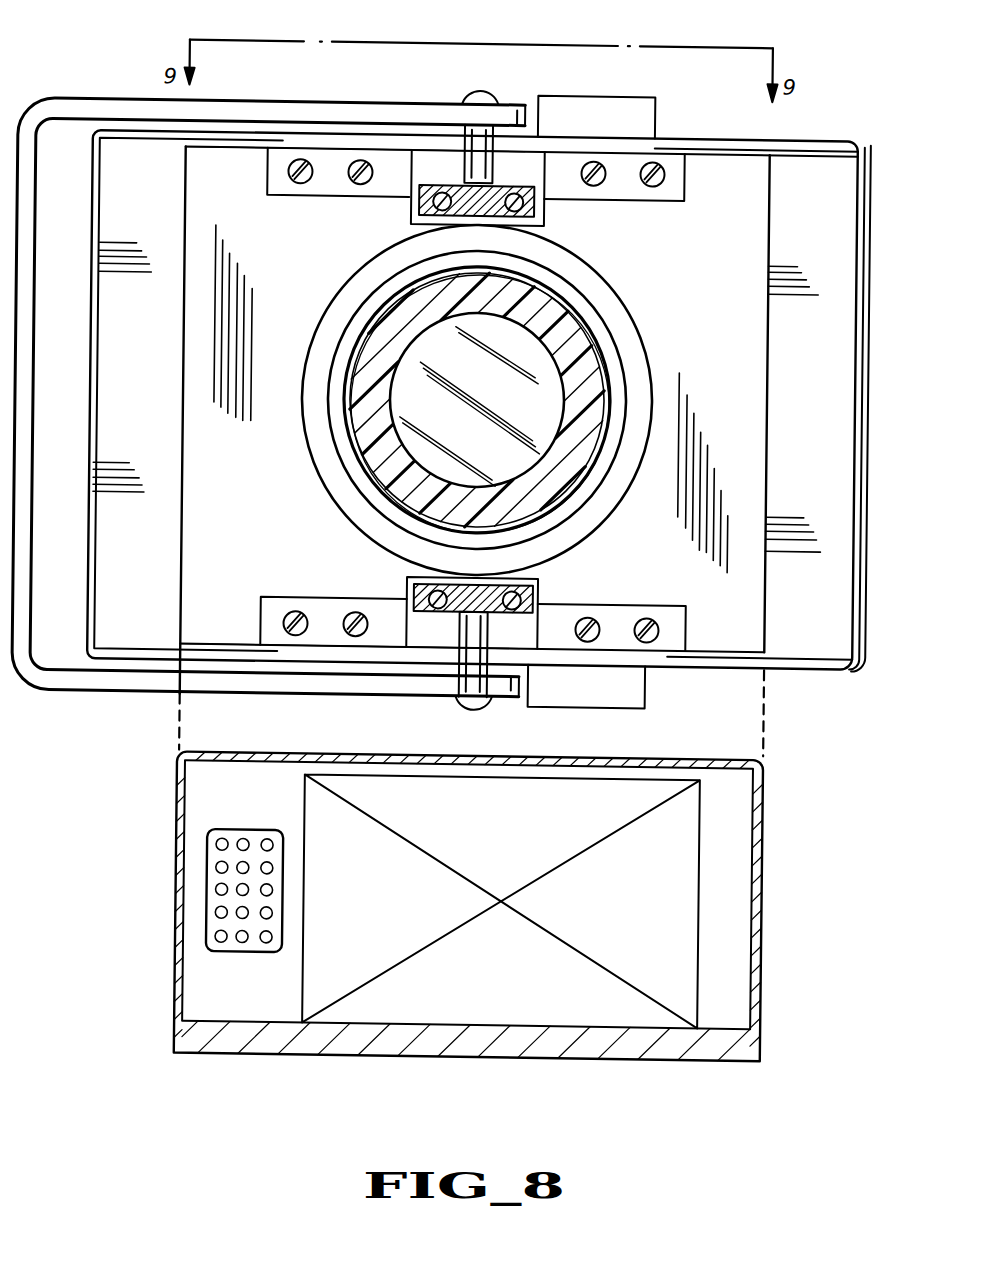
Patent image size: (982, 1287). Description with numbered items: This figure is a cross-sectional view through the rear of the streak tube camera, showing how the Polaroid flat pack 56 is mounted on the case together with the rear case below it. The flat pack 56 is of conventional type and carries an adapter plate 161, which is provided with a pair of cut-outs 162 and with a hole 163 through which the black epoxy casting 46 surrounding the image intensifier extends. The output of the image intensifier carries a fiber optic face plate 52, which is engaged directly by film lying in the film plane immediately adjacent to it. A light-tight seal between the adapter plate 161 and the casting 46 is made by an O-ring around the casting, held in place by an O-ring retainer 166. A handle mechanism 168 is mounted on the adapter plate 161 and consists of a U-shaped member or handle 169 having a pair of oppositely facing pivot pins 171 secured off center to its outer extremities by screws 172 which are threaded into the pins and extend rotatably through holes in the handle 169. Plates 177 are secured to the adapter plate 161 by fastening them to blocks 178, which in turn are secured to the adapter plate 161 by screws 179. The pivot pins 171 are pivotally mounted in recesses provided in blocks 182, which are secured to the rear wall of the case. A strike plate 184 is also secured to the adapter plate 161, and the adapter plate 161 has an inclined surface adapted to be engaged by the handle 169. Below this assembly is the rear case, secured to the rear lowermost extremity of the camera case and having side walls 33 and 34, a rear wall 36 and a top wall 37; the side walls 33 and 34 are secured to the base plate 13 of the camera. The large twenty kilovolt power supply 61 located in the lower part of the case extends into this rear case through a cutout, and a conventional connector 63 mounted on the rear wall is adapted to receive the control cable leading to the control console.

The base plate 13 is at (605, 1043).
The side wall 33 is at (770, 846).
The side wall 34 is at (182, 846).
The rear wall 36 is at (736, 946).
The top wall 37 is at (269, 758).
The black epoxy casting 46 is at (393, 476).
The fiber optic face plate 52 is at (425, 421).
The Polaroid flat pack 56 is at (867, 371).
The 20 KV power supply 61 is at (449, 1004).
The connector 63 is at (221, 929).
The adapter plate 161 is at (771, 463).
The cut-outs 162 is at (428, 633).
The hole 163 is at (601, 341).
The O-ring retainer 166 is at (599, 280).
The handle mechanism 168 is at (119, 67).
The U-shaped member or handle 169 is at (100, 113).
The pivot pins 171 is at (457, 133).
The screws 172 is at (480, 97).
The plates 177 is at (387, 146).
The blocks 178 is at (276, 191).
The screws 179 is at (345, 185).
The blocks 182 is at (526, 207).
The strike plate 184 is at (587, 113).